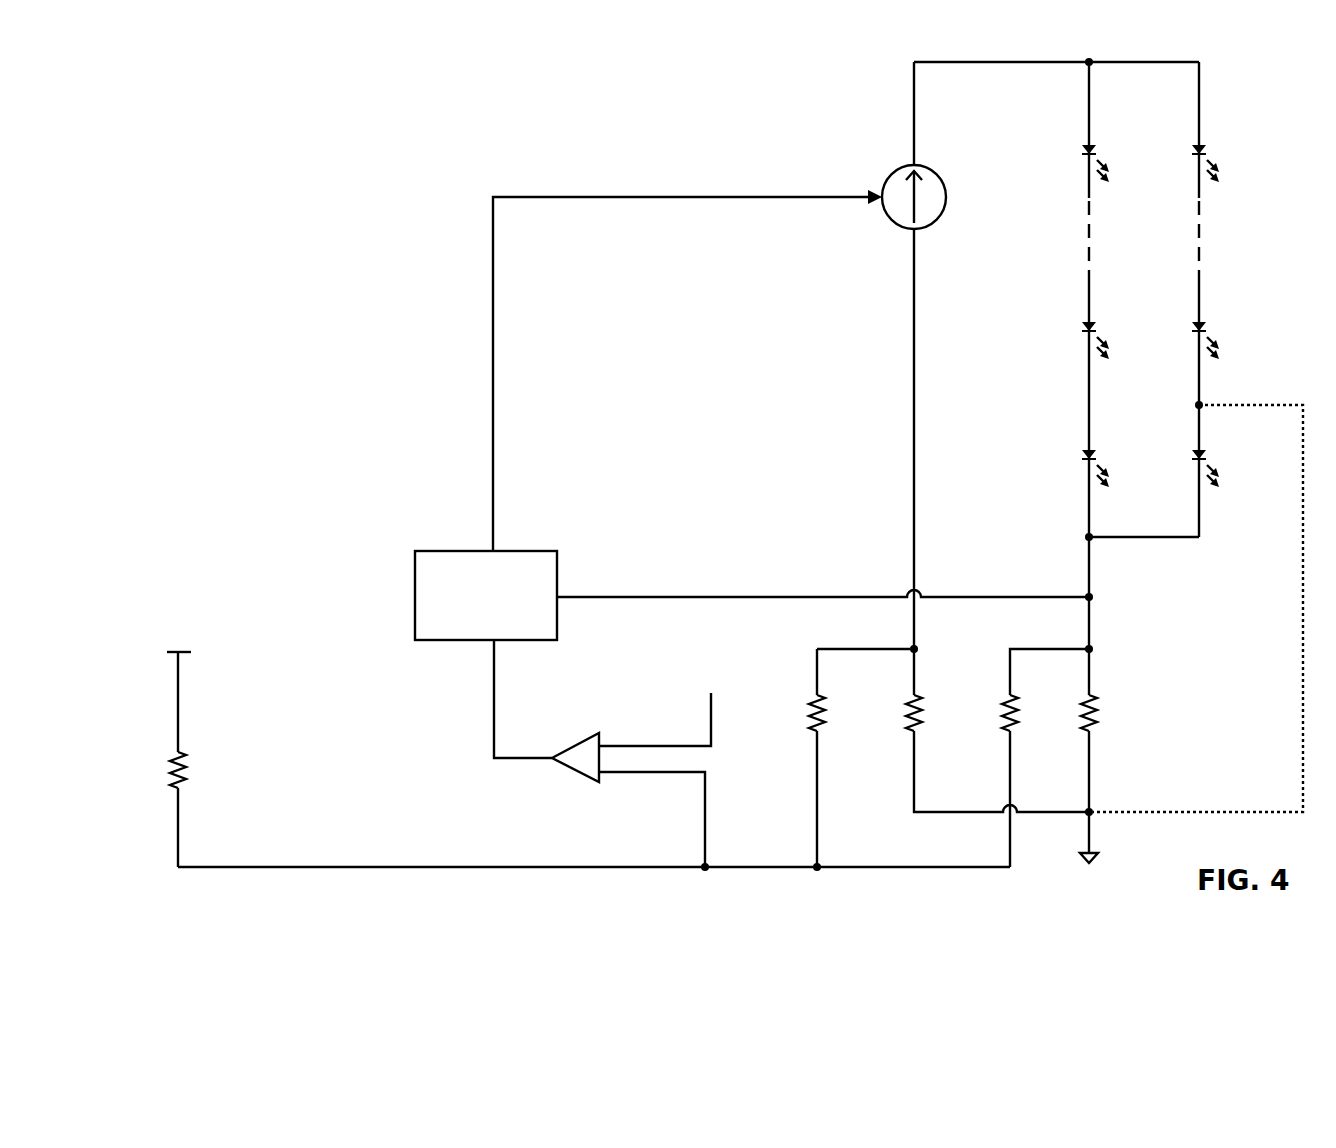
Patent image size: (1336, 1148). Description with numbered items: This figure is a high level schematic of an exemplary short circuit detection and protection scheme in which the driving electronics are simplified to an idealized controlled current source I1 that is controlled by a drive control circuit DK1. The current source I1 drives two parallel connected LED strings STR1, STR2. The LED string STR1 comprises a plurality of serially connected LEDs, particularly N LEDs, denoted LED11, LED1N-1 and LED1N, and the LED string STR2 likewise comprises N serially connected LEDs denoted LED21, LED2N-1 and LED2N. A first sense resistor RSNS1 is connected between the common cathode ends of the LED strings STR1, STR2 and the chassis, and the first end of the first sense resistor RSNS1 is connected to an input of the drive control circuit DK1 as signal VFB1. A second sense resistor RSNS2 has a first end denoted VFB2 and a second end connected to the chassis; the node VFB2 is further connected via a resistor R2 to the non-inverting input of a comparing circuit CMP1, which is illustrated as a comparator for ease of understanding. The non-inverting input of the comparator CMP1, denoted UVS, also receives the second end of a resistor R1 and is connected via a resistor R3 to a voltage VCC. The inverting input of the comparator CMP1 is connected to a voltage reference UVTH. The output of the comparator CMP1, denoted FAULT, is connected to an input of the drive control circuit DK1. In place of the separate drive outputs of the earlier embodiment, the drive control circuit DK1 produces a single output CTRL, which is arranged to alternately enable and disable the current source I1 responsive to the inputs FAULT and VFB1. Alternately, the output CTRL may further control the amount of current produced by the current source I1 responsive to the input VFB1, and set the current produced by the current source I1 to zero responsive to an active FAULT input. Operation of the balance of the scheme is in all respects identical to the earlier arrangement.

The controlled current source I1 is at (946, 197).
The drive control circuit DK1 is at (517, 551).
The comparing circuit CMP1 is at (567, 770).
The resistor R1 is at (1020, 716).
The resistor R2 is at (827, 716).
The resistor R3 is at (190, 770).
The first sense resistor RSNS1 is at (1099, 716).
The second sense resistor RSNS2 is at (968, 732).
The LED string STR1 is at (1091, 272).
The LED string STR2 is at (1201, 272).
The LED LED11 is at (1100, 150).
The LED LED21 is at (1210, 150).
The LED LED1N-1 is at (1100, 327).
The LED LED2N-1 is at (1210, 327).
The LED LED1N is at (1100, 455).
The LED LED2N is at (1212, 455).
The output CTRL is at (656, 370).
The signal VFB1 is at (825, 586).
The node VFB2 is at (865, 638).
The output FAULT is at (486, 699).
The voltage reference UVTH is at (671, 708).
The non-inverting input UVS is at (594, 821).
The voltage VCC is at (180, 688).